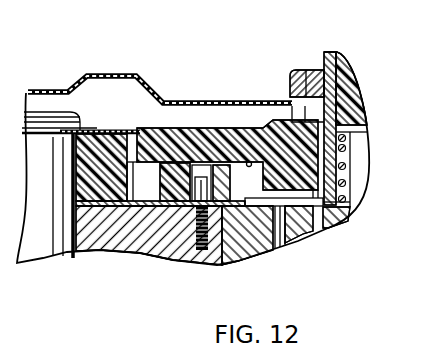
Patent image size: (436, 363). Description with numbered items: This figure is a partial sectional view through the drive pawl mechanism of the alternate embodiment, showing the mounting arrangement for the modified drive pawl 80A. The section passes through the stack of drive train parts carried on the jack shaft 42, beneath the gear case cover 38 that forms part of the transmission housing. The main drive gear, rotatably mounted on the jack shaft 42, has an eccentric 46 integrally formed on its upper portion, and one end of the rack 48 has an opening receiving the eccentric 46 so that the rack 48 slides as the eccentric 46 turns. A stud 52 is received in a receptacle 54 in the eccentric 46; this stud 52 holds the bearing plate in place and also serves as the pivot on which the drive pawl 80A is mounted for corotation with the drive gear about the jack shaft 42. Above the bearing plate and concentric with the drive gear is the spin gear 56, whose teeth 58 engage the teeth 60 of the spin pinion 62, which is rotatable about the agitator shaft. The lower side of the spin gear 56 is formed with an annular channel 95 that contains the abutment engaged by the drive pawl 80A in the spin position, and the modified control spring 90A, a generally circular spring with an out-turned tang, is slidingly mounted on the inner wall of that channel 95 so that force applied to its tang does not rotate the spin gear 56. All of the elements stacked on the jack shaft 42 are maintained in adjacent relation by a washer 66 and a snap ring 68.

The gear case cover 38 is at (140, 74).
The jack shaft 42 is at (43, 233).
The eccentric 46 is at (145, 240).
The rack 48 is at (250, 240).
The stud 52 is at (292, 237).
The receptacle 54 is at (220, 263).
The spin gear 56 is at (227, 132).
The teeth 58 is at (334, 185).
The teeth 60 is at (315, 68).
The spin pinion 62 is at (326, 52).
The washer 66 is at (100, 129).
The snap ring 68 is at (80, 127).
The drive pawl 80A is at (177, 163).
The control spring 90A is at (133, 165).
The annular channel 95 is at (257, 128).